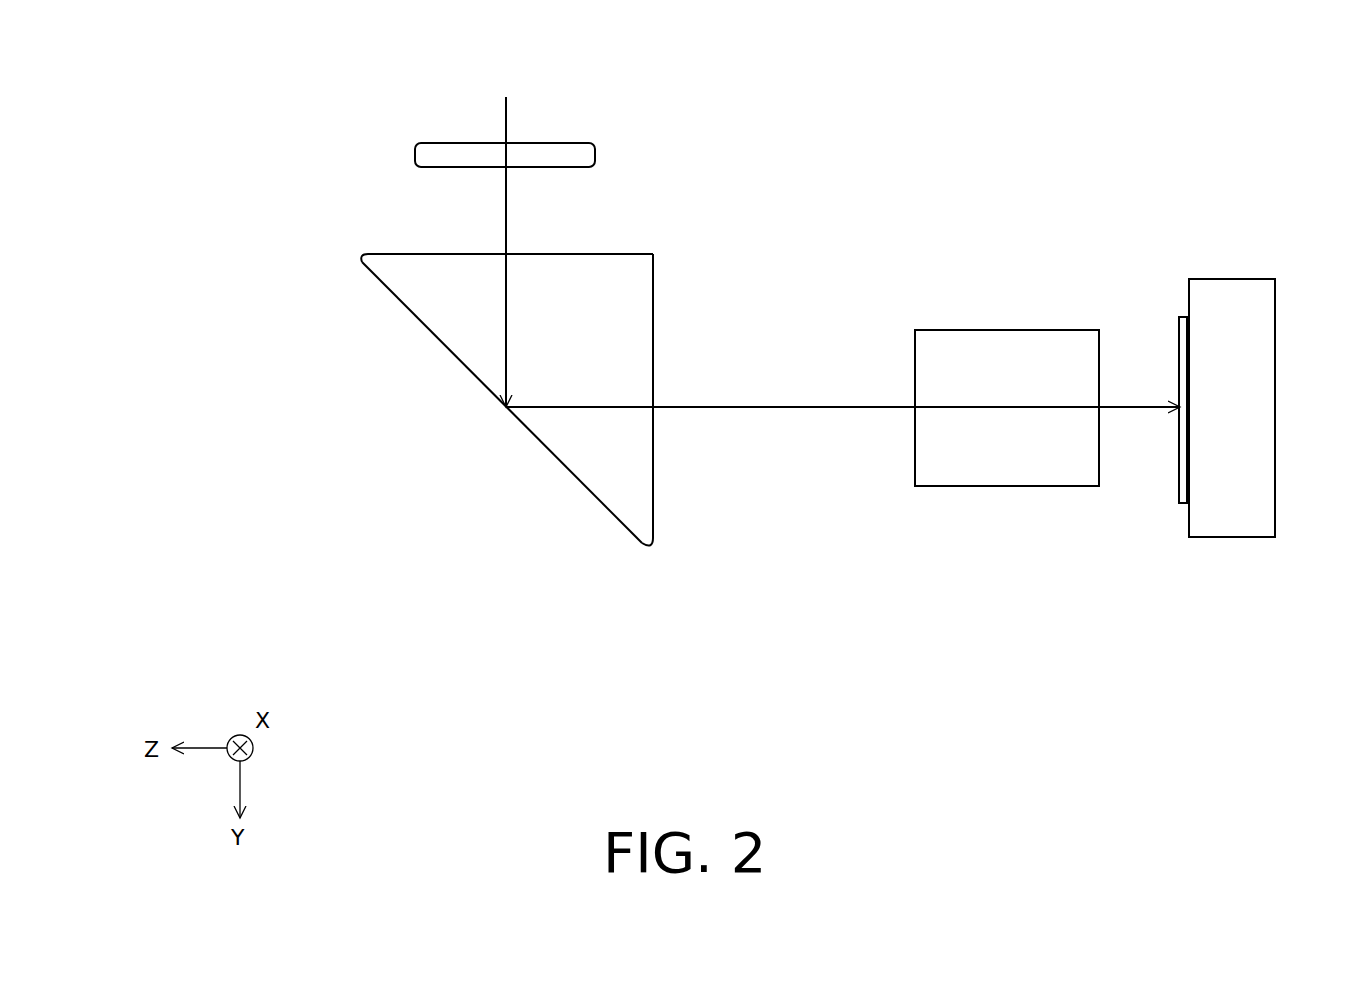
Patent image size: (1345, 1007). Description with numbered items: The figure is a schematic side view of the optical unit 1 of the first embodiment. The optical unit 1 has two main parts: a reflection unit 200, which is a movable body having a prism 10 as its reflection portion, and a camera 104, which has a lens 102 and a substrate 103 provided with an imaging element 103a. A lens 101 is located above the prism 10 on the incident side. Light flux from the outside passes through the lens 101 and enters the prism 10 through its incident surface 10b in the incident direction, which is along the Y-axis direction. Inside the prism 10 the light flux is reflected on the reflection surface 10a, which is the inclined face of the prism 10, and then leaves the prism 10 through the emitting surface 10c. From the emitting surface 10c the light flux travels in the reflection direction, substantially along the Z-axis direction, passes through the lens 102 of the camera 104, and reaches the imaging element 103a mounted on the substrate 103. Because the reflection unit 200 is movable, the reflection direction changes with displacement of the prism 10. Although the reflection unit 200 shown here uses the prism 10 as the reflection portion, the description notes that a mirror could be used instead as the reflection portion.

The optical unit 1 is at (900, 138).
The prism 10 is at (632, 254).
The reflection surface 10a is at (390, 295).
The incident surface 10b is at (452, 253).
The emitting surface 10c is at (654, 286).
The lens 101 is at (585, 133).
The lens 102 is at (1065, 290).
The substrate 103 is at (1215, 272).
The imaging element 103a is at (1178, 482).
The camera 104 is at (1326, 168).
The reflection unit 200 is at (723, 273).